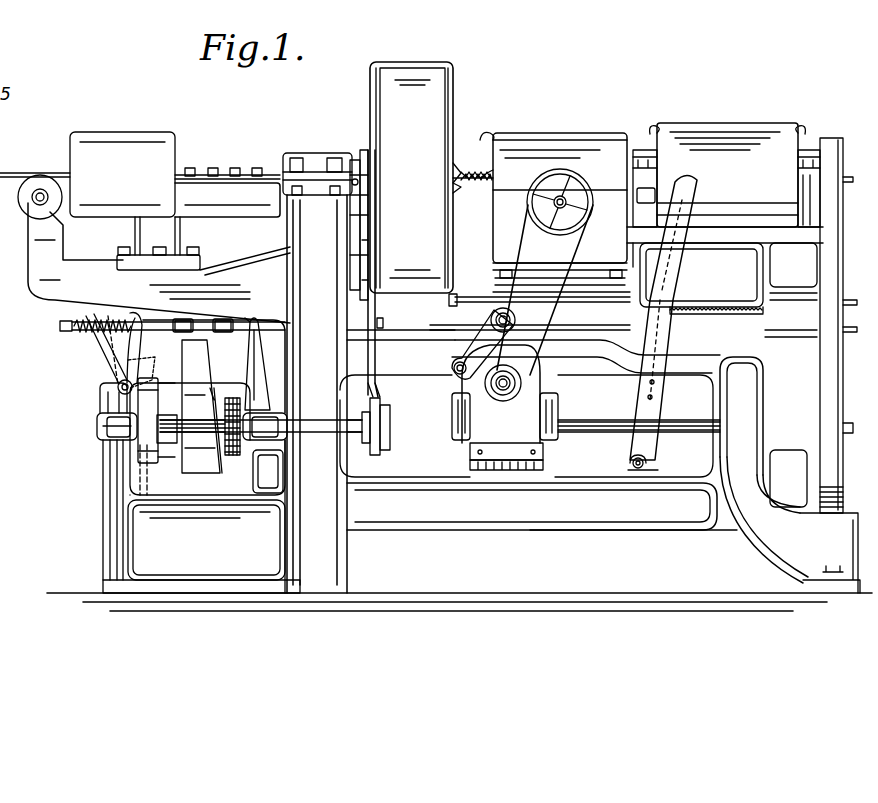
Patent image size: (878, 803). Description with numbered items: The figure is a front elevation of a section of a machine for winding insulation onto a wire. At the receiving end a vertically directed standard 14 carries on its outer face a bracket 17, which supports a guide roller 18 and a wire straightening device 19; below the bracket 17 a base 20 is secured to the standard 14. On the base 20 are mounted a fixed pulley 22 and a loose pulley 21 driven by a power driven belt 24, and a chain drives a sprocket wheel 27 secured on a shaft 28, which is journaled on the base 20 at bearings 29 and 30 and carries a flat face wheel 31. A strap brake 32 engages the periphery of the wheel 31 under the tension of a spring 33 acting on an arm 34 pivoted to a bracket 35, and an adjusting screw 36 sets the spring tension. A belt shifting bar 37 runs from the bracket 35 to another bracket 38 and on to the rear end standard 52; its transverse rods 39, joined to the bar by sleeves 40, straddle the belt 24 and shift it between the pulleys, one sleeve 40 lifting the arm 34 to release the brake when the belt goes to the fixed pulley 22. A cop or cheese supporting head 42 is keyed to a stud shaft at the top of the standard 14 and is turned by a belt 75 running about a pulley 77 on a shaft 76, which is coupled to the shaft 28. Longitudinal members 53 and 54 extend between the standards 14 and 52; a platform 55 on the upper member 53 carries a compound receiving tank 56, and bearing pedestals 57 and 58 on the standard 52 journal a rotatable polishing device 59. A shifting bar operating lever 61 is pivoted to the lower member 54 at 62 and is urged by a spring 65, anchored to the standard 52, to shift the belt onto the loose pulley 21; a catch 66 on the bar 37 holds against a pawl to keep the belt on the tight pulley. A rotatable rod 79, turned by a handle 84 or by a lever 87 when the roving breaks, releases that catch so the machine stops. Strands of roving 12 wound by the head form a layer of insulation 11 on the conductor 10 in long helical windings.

The conductor 10 is at (12, 176).
The layer of insulation 11 is at (487, 170).
The strands of roving 12 is at (457, 163).
The standard 14 is at (481, 365).
The bracket 17 is at (42, 262).
The guide roller 18 is at (41, 177).
The wire straightening device 19 is at (160, 158).
The base 20 is at (206, 540).
The loose pulley 21 is at (217, 390).
The fixed pulley 22 is at (163, 387).
The belt 24 is at (201, 406).
The sprocket wheel 27 is at (237, 453).
The shaft 28 is at (200, 430).
The bearing 29 is at (107, 433).
The bearing 30 is at (283, 437).
The flat face wheel 31 is at (147, 440).
The strap brake 32 is at (137, 387).
The spring 33 is at (110, 330).
The arm 34 is at (123, 343).
The bracket 35 is at (110, 397).
The adjusting screw 36 is at (73, 322).
The belt shifting bar 37 is at (247, 317).
The bracket 38 is at (253, 370).
The rods 39 is at (230, 320).
The sleeves 40 is at (180, 320).
The cop or cheese supporting head 42 is at (360, 167).
The rear end standard 52 is at (764, 470).
The longitudinally directed member 53 is at (580, 345).
The longitudinally directed member 54 is at (542, 506).
The platform 55 is at (587, 313).
The compound receiving tank 56 is at (602, 203).
The bearing pedestal 57 is at (645, 157).
The bearing pedestal 58 is at (808, 157).
The rotatable polishing device 59 is at (728, 175).
The shifting bar operating lever 61 is at (680, 217).
The pivot 62 is at (633, 461).
The spring 65 is at (747, 317).
The catch 66 is at (381, 323).
The belt 75 is at (378, 372).
The shaft 76 is at (590, 427).
The pulley 77 is at (390, 410).
The rotatable rod 79 is at (612, 302).
The handle 84 is at (457, 292).
The lever 87 is at (358, 257).